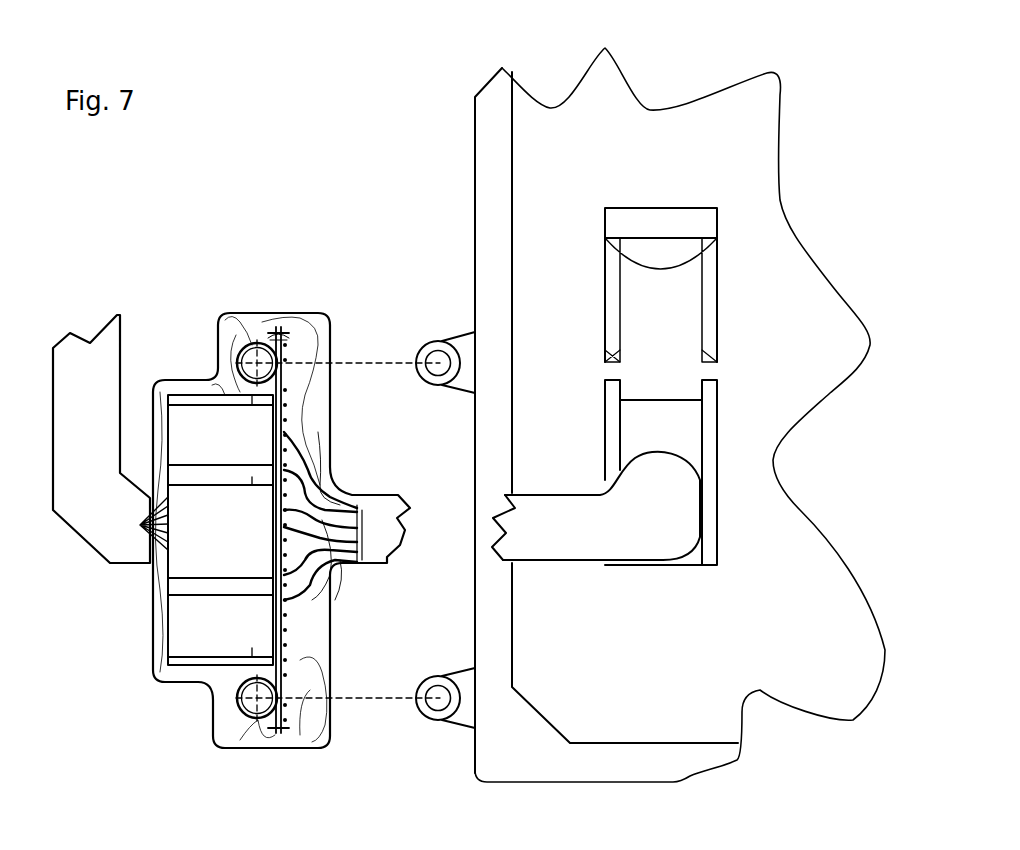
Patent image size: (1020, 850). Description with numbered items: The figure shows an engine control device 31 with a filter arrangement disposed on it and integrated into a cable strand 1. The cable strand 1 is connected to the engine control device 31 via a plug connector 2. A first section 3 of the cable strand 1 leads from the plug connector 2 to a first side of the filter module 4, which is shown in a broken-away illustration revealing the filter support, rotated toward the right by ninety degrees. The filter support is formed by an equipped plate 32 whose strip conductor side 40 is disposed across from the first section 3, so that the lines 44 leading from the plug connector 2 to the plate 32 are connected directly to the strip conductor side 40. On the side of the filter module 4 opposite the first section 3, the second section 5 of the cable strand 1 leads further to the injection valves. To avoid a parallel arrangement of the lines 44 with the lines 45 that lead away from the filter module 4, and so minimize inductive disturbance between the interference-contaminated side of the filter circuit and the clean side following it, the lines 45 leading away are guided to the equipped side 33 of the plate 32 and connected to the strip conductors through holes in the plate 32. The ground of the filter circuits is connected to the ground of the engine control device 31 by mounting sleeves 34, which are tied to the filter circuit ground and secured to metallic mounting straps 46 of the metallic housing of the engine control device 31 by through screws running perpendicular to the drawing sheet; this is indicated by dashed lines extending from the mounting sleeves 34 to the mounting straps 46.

The cable strand 1 is at (168, 697).
The plug connector 2 is at (655, 310).
The first section of the cable strand 3 is at (632, 522).
The filter module 4 is at (302, 657).
The second section of the cable strand 5 is at (83, 422).
The engine control device 31 is at (588, 185).
The equipped plate 32 is at (279, 327).
The equipped side 33 is at (270, 433).
The mounting sleeves 34 is at (237, 335).
The strip conductor side 40 is at (288, 348).
The lines 44 is at (312, 490).
The lines leading away 45 is at (150, 533).
The mounting straps 46 is at (445, 343).